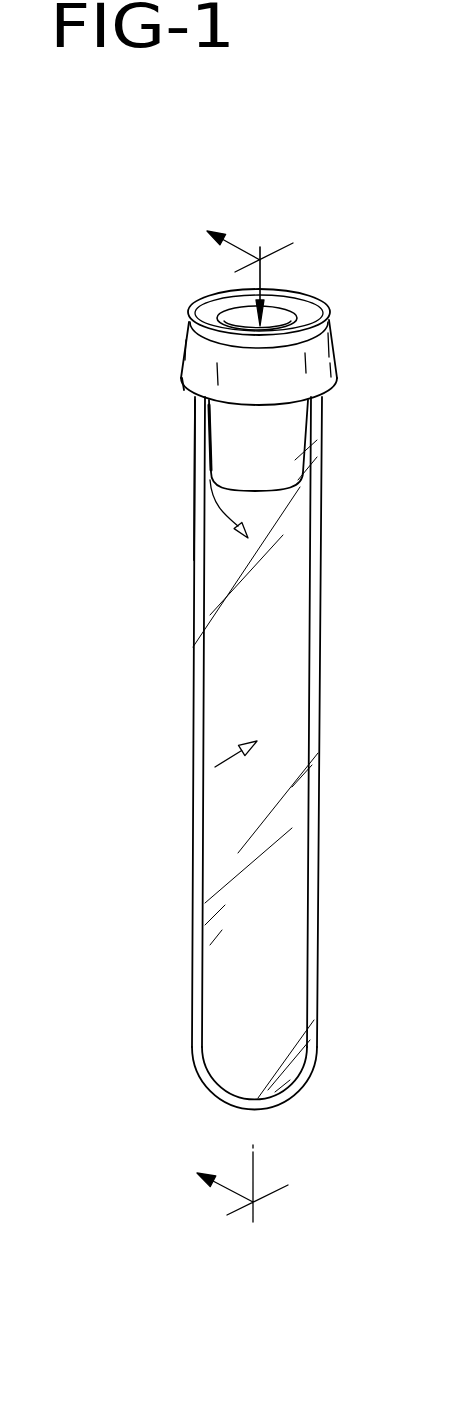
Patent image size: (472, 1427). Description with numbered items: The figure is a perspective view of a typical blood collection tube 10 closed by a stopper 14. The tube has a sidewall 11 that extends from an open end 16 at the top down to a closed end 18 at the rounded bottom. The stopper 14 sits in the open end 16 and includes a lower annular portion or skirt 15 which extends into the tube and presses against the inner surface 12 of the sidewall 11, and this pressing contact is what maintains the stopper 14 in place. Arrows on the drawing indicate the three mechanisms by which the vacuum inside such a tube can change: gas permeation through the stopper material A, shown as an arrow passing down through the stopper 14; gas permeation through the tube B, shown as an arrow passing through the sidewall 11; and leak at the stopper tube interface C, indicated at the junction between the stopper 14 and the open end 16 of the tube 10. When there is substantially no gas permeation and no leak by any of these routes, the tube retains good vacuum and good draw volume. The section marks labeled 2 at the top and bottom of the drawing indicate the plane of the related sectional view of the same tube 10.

The blood collection tube 10 is at (160, 230).
The sidewall 11 is at (196, 417).
The inner surface 12 is at (205, 910).
The stopper 14 is at (320, 318).
The lower annular portion or skirt 15 is at (287, 488).
The open end 16 is at (325, 396).
The closed end 18 is at (245, 1108).
The gas permeation through the stopper material A is at (262, 283).
The gas permeation through the tube B is at (205, 775).
The leak at the stopper tube interface C is at (192, 388).
The section line for FIG. 2 is at (245, 736).